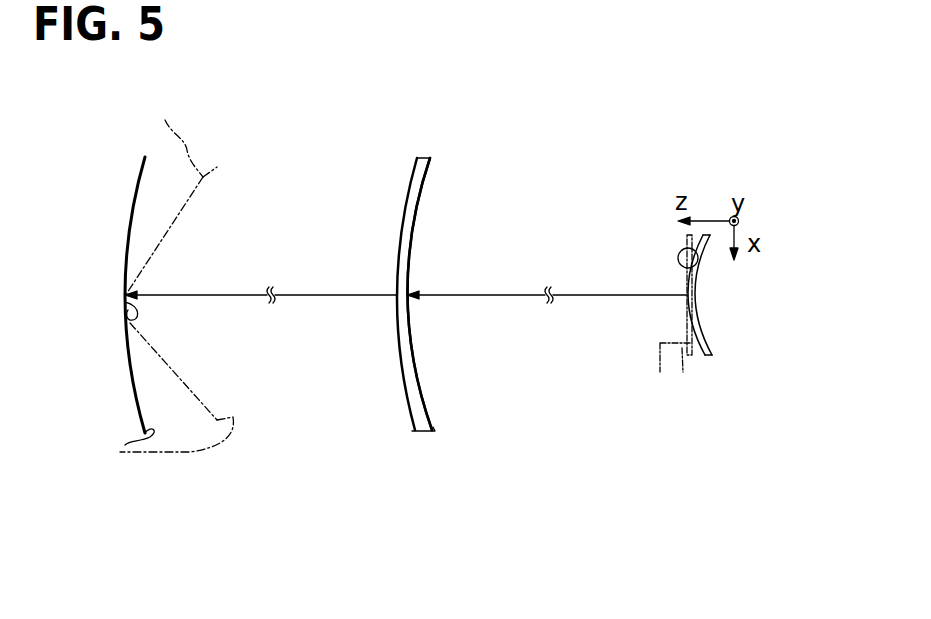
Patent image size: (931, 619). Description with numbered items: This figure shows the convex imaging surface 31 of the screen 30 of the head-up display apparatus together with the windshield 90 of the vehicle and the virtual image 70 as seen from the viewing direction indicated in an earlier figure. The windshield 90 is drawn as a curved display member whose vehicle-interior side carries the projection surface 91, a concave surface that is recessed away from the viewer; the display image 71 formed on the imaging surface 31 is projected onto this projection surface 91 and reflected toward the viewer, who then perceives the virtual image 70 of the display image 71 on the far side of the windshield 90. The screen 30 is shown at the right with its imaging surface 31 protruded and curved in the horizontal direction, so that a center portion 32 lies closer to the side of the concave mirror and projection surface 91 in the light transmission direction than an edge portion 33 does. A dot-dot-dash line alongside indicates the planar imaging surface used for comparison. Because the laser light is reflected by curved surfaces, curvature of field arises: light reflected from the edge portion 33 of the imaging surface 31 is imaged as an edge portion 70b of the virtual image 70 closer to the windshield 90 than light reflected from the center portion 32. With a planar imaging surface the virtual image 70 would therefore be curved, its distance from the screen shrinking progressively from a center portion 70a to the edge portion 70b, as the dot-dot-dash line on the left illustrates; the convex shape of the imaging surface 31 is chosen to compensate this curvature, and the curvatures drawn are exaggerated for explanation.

The virtual image 70 is at (145, 168).
The center portion of the virtual image 70a is at (127, 320).
The edge portion of the virtual image 70b is at (145, 433).
The windshield 90 is at (410, 180).
The projection surface 91 is at (413, 237).
The screen 30 is at (703, 334).
The display image 71 is at (700, 250).
The imaging surface 31 is at (690, 315).
The center portion of the imaging surface 32 is at (687, 297).
The edge portion of the imaging surface 33 is at (705, 356).